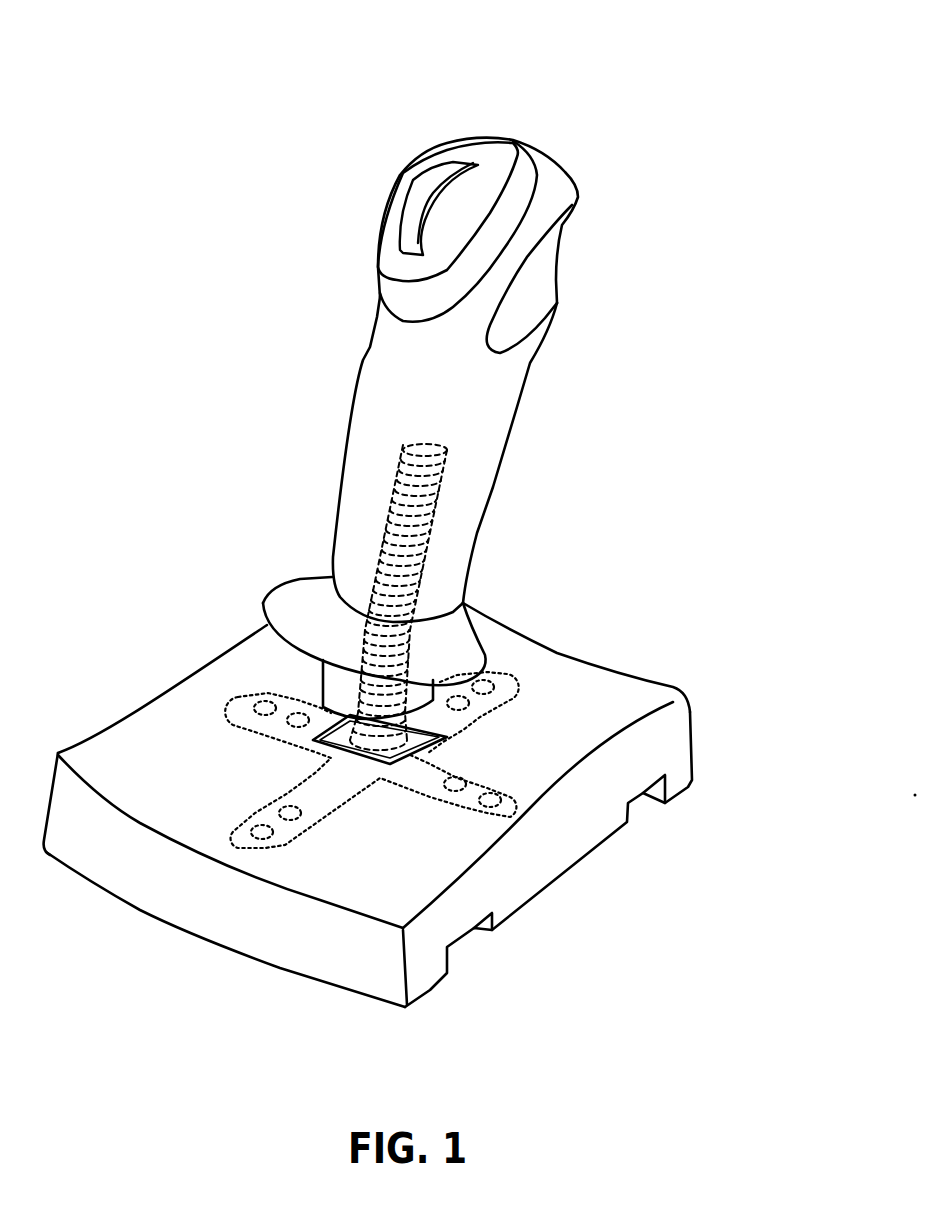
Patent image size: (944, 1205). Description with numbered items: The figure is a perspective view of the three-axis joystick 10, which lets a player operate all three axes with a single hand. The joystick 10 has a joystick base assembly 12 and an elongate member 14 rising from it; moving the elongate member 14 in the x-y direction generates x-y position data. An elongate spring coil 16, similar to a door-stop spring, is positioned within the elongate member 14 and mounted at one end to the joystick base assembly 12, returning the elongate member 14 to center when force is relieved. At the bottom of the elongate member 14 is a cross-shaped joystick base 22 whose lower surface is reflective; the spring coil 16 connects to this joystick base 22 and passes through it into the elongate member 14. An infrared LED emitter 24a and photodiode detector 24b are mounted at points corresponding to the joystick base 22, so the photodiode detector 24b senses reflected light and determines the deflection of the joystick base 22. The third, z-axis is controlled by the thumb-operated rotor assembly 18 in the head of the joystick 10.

The joystick 10 is at (260, 331).
The joystick base assembly 12 is at (587, 687).
The elongate member 14 is at (493, 407).
The spring coil 16 is at (427, 528).
The rotor assembly 18 is at (415, 193).
The joystick base 22 is at (348, 802).
The LED emitter 24a is at (267, 833).
The photodiode detector 24b is at (302, 815).